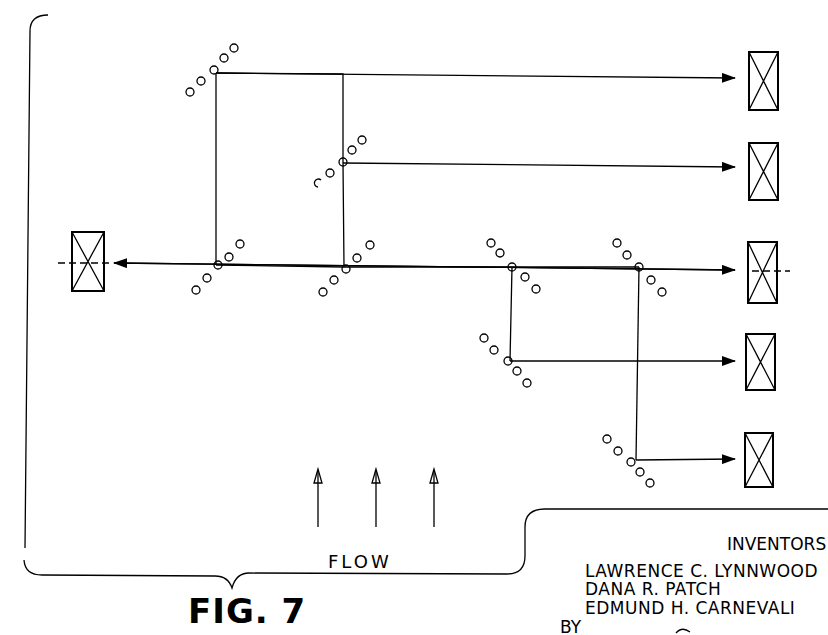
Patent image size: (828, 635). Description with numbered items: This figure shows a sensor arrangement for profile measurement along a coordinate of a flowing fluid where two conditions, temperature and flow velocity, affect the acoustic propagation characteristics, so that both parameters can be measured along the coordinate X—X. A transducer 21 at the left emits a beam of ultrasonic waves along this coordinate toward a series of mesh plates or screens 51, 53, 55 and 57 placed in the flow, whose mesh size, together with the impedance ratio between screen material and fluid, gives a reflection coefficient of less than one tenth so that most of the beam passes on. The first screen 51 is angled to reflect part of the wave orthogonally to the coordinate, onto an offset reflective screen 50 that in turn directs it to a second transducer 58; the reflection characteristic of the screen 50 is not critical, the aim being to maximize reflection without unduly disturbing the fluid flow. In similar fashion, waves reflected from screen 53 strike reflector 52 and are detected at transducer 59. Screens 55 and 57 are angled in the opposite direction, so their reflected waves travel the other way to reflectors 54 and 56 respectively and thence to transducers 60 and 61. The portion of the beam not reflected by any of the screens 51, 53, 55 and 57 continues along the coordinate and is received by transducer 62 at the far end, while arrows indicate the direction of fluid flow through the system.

The transducer 21 is at (100, 232).
The offset reflective screen 50 is at (228, 58).
The first screen 51 is at (233, 256).
The reflector 52 is at (341, 159).
The screen 53 is at (361, 257).
The reflector 54 is at (513, 371).
The screen 55 is at (515, 263).
The reflector 56 is at (614, 452).
The screen 57 is at (642, 263).
The second transducer 58 is at (779, 82).
The transducer 59 is at (779, 167).
The transducer 60 is at (775, 360).
The transducer 61 is at (773, 462).
The transducer 62 is at (777, 262).